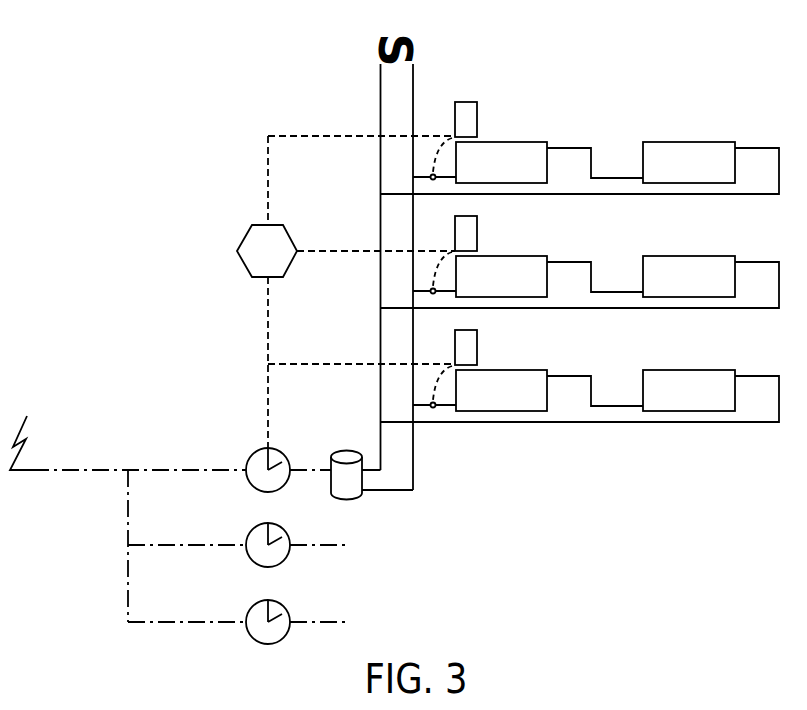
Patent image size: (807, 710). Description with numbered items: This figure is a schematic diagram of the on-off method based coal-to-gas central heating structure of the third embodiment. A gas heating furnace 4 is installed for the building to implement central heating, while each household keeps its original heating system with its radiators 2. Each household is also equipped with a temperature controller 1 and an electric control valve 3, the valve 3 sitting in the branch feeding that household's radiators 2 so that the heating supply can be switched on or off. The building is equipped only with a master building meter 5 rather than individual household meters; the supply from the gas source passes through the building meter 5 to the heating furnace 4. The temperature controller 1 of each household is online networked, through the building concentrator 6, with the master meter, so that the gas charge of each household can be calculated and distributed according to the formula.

The temperature controller 1 is at (466, 119).
The radiator 2 is at (595, 276).
The electric control valve 3 is at (442, 284).
The heating furnace 4 is at (372, 475).
The building meter 5 is at (268, 536).
The building concentrator 6 is at (267, 251).